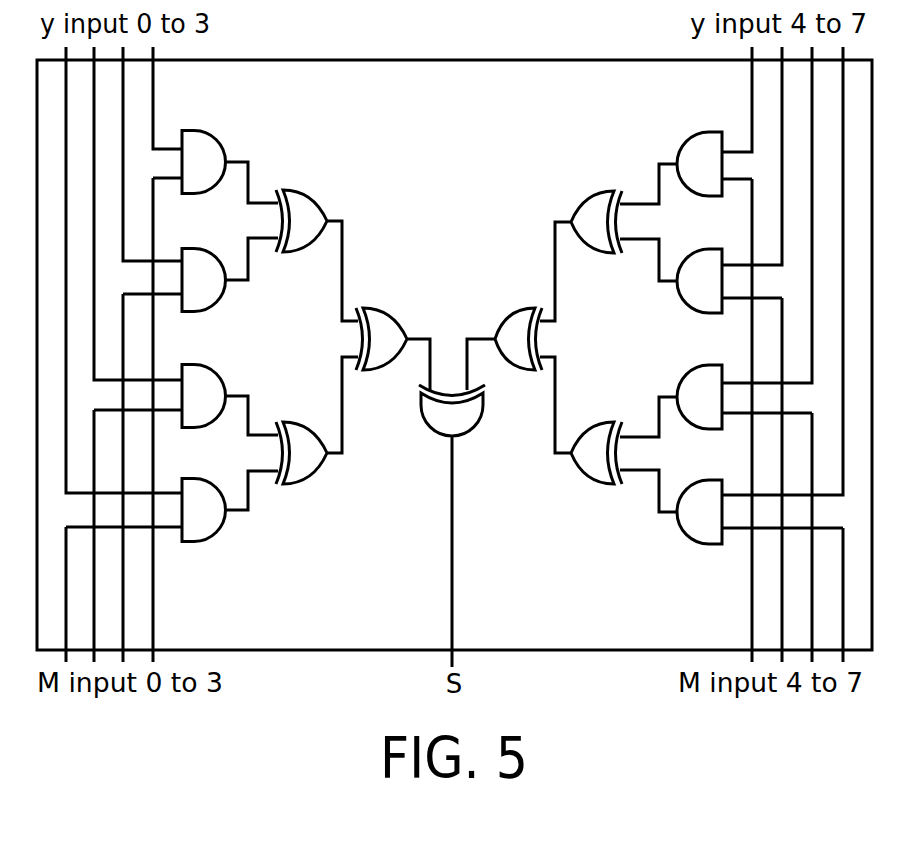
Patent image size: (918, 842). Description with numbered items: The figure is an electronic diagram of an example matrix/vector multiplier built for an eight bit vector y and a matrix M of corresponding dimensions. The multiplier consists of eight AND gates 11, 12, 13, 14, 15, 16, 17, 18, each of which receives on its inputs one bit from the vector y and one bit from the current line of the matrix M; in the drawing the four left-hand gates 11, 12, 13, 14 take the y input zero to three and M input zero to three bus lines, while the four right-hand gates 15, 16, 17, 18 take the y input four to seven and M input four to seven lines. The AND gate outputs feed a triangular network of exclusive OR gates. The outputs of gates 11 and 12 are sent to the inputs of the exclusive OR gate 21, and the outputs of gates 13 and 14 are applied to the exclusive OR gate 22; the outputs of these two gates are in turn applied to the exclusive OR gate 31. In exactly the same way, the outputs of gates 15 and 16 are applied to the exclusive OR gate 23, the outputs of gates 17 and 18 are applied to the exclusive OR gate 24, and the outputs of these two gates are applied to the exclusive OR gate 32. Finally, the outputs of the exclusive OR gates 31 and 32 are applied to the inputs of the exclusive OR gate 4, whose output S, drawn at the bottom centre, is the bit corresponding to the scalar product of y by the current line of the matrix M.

The AND gate 11 is at (207, 153).
The AND gate 12 is at (205, 290).
The AND gate 13 is at (210, 391).
The AND gate 14 is at (203, 528).
The AND gate 15 is at (697, 150).
The AND gate 16 is at (695, 292).
The AND gate 17 is at (695, 392).
The AND gate 18 is at (697, 527).
The exclusive OR gate 21 is at (318, 186).
The exclusive OR gate 22 is at (317, 473).
The exclusive OR gate 23 is at (600, 193).
The exclusive OR gate 24 is at (588, 468).
The exclusive OR gate 31 is at (384, 310).
The exclusive OR gate 32 is at (512, 310).
The exclusive OR gate 4 is at (461, 419).